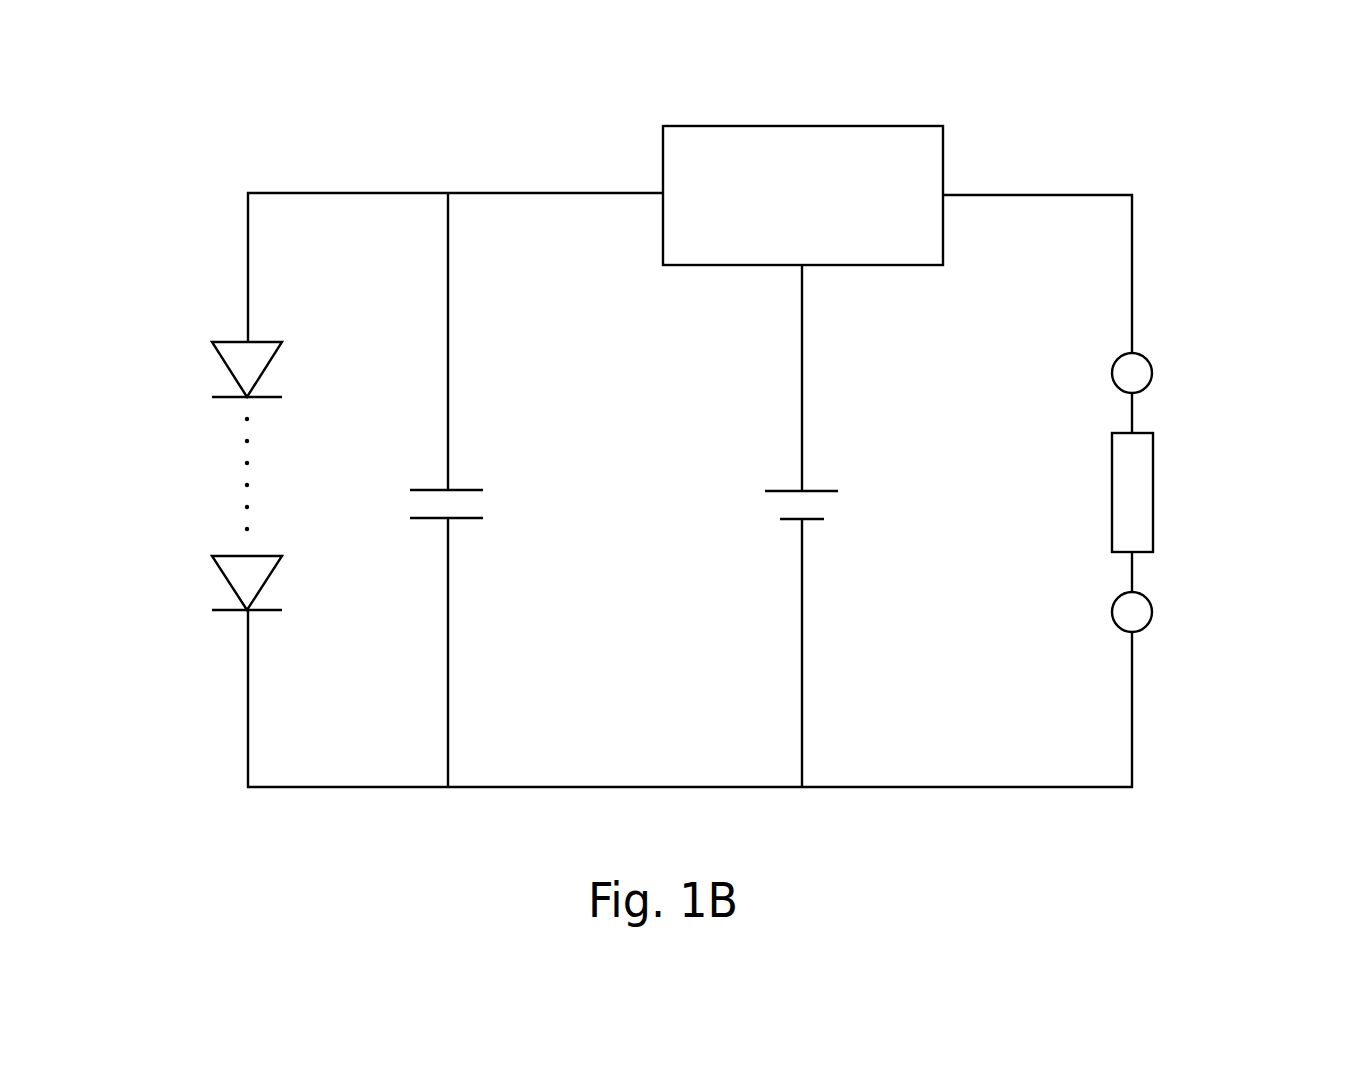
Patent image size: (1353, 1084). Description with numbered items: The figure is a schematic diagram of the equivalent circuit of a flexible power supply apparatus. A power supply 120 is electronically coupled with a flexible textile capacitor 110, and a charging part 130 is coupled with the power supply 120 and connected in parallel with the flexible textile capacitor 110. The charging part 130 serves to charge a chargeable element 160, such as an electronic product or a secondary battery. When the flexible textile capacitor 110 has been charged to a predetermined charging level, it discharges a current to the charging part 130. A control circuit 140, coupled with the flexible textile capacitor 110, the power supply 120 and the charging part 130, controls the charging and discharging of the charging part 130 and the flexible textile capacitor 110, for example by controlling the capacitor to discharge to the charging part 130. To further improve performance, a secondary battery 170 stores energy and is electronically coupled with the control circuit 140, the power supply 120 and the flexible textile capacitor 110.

The flexible textile capacitor 110 is at (493, 502).
The power supply 120 is at (173, 343).
The charging part 130 is at (1154, 372).
The control circuit 140 is at (882, 138).
The chargeable element 160 is at (1143, 494).
The secondary battery 170 is at (852, 503).